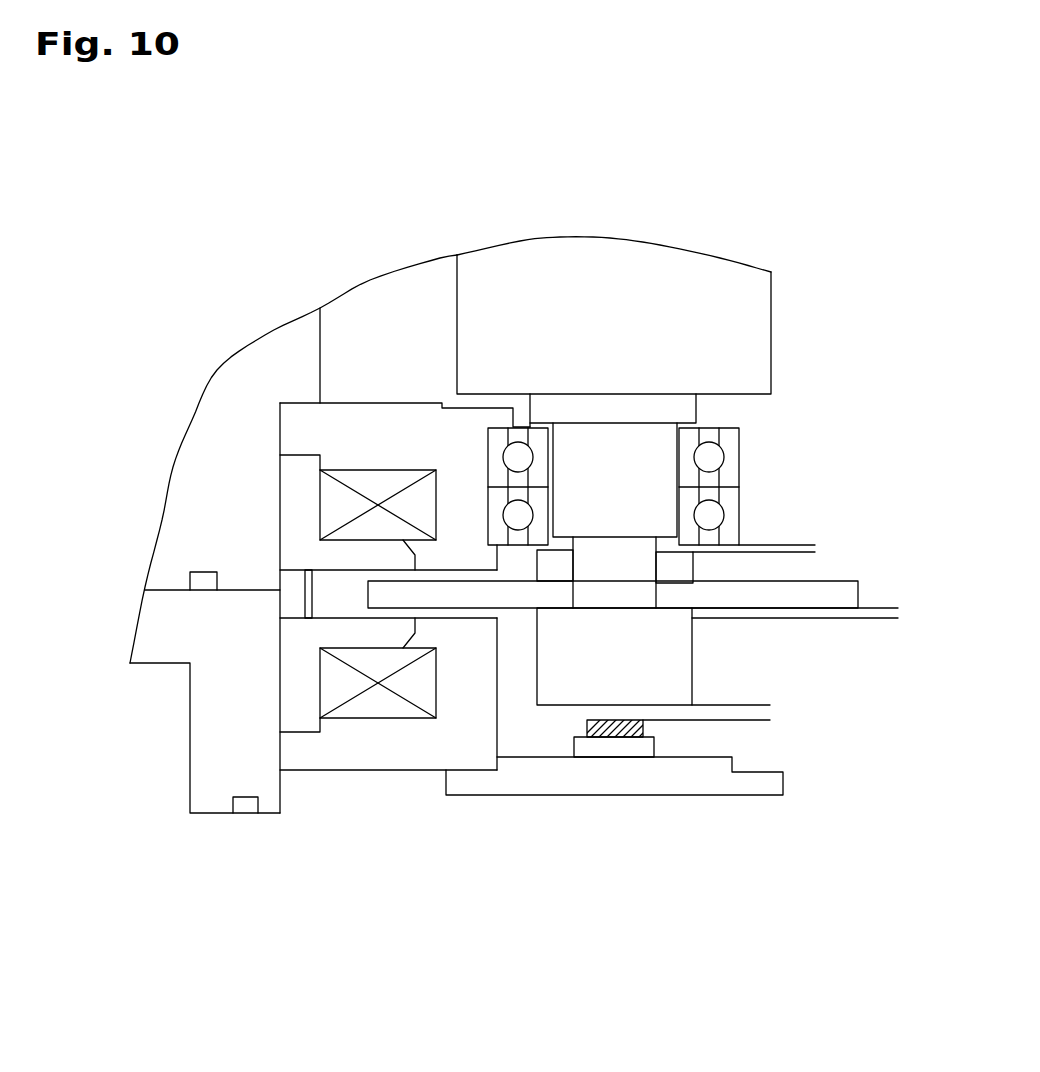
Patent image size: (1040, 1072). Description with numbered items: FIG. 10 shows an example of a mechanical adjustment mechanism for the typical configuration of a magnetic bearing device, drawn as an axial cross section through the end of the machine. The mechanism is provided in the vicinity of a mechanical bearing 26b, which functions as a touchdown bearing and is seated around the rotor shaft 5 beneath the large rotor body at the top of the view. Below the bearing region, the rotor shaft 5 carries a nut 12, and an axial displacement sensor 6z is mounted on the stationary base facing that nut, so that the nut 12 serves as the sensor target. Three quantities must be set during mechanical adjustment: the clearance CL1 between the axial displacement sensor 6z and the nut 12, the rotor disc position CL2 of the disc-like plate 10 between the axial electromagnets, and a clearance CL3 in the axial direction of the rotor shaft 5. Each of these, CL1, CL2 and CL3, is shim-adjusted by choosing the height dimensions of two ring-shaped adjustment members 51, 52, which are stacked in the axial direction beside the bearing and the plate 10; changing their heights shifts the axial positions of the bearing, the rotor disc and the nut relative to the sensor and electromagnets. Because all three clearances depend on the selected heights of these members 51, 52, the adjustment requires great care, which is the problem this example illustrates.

The rotor shaft 5 is at (758, 333).
The mechanical bearing 26b is at (498, 440).
The ring-shaped adjustment member 51 is at (665, 547).
The ring-shaped adjustment member 52 is at (677, 567).
The plate 10 is at (385, 597).
The nut 12 is at (577, 668).
The axial displacement sensor 6z is at (612, 733).
The clearance CL1 is at (753, 688).
The rotor disc position CL2 is at (887, 585).
The clearance CL3 is at (805, 523).